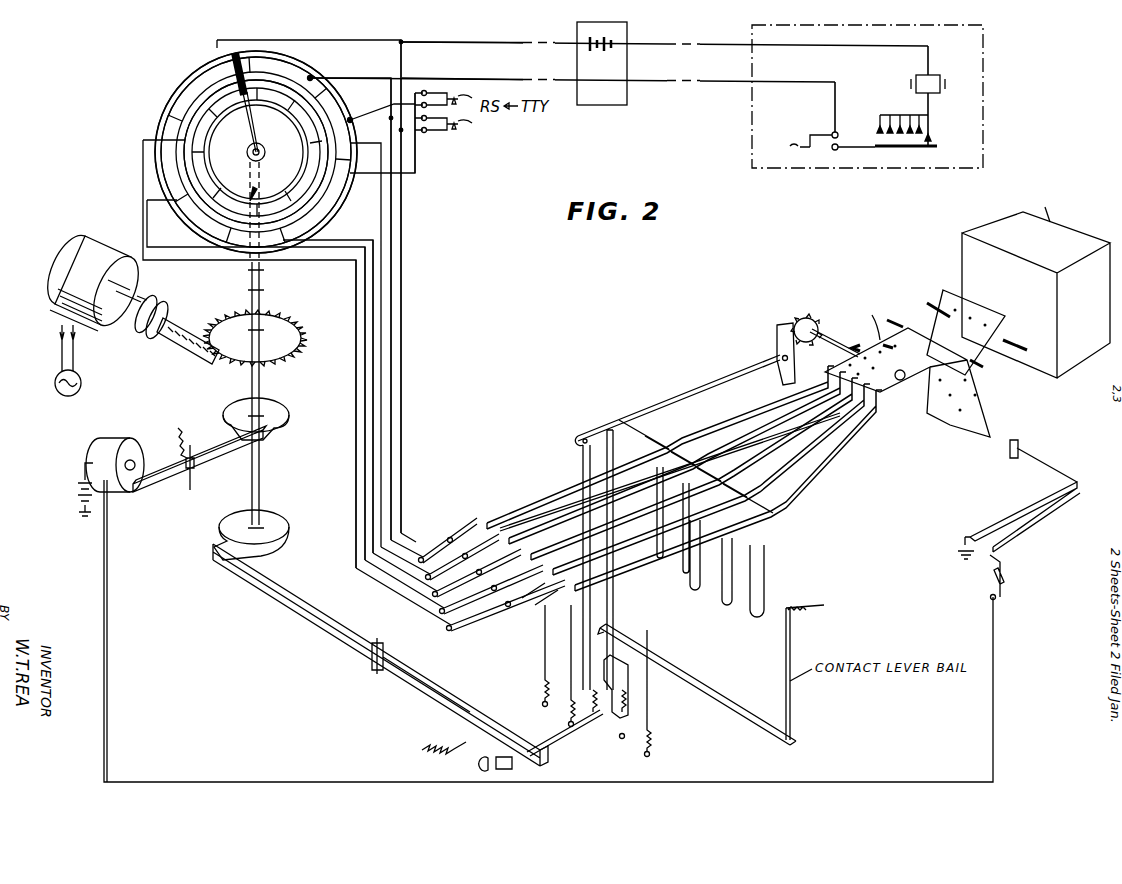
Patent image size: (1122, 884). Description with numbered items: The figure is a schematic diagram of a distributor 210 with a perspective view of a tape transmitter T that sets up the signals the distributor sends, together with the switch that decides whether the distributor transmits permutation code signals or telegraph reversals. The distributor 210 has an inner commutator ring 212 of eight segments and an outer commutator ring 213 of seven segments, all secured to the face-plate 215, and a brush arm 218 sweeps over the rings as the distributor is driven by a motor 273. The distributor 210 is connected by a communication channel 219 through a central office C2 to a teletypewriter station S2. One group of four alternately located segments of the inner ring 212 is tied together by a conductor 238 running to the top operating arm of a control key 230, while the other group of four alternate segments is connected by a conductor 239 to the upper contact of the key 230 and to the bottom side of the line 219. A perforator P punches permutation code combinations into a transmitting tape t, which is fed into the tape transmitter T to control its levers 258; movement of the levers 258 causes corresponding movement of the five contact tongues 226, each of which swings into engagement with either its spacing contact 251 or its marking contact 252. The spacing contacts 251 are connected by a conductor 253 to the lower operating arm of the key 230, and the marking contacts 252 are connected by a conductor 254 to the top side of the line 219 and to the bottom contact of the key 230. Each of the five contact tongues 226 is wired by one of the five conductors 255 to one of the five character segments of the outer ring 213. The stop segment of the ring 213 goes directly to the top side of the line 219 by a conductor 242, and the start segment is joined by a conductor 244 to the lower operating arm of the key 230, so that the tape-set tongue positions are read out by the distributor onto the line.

The distributor 210 is at (256, 147).
The inner commutator ring 212 is at (185, 150).
The outer commutator ring 213 is at (172, 116).
The face-plate 215 is at (178, 97).
The distributor brush arm 218 is at (263, 143).
The communication channel 219 is at (454, 44).
The contact tongues 226 is at (466, 530).
The control key 230 is at (482, 112).
The conductor 238 is at (417, 170).
The conductor 239 is at (381, 110).
The conductor 242 is at (358, 40).
The conductor 244 is at (372, 78).
The spacing contacts 251 is at (542, 640).
The marking contacts 252 is at (423, 549).
The conductor 253 is at (398, 312).
The conductor 254 is at (403, 356).
The conductors 255 is at (373, 362).
The levers 258 is at (812, 466).
The motor 273 is at (50, 262).
The central office C2 is at (617, 105).
The teletypewriter station S2 is at (868, 170).
The perforator P is at (962, 258).
The tape transmitter T is at (943, 520).
The transmitting tape t is at (1000, 365).